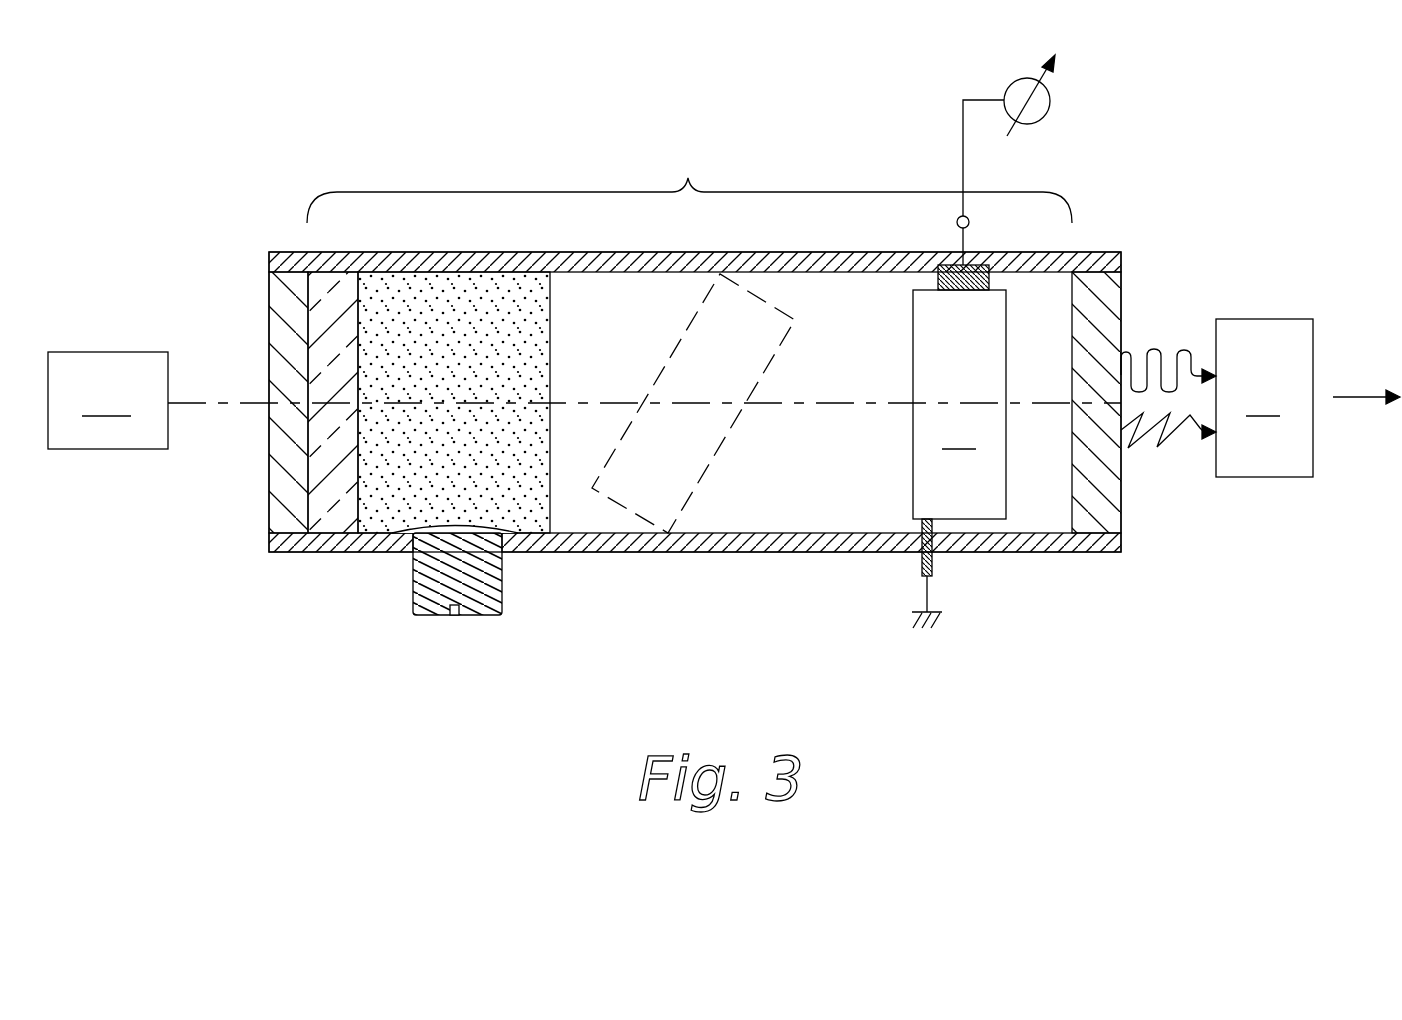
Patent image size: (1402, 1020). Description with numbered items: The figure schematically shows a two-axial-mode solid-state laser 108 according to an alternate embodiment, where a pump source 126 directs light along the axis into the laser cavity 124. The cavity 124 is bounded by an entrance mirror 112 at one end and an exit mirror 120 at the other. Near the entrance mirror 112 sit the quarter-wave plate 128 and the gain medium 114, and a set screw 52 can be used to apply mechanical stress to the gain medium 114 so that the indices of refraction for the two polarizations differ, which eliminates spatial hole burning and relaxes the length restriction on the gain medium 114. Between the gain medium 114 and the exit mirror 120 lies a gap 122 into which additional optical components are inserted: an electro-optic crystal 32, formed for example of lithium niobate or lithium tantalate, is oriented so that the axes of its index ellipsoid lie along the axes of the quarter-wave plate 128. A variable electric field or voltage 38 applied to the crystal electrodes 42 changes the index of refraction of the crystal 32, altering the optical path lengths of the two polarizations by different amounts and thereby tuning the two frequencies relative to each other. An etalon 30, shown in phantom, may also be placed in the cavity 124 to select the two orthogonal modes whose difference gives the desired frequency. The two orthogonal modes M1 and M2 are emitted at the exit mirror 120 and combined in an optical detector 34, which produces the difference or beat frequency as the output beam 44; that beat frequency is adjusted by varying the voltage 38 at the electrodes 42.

The gas discharge laser device 108 is at (819, 597).
The gap 122 is at (773, 507).
The entrance mirror 112 is at (269, 512).
The quarter-wave plate 128 is at (332, 524).
The gain medium 114 is at (390, 522).
The set screw 52 is at (443, 615).
The light source 126 is at (108, 400).
The etalon 30 is at (698, 486).
The electro-optic crystal 32 is at (959, 404).
The crystal electrodes 42 is at (978, 262).
The variable electric field 38 is at (1050, 102).
The exit mirror 120 is at (1097, 522).
The cavity 124 is at (689, 185).
The orthogonal mode M1 is at (1153, 348).
The orthogonal mode M2 is at (1162, 448).
The optical detector 34 is at (1264, 398).
The output beam 44 is at (1360, 398).